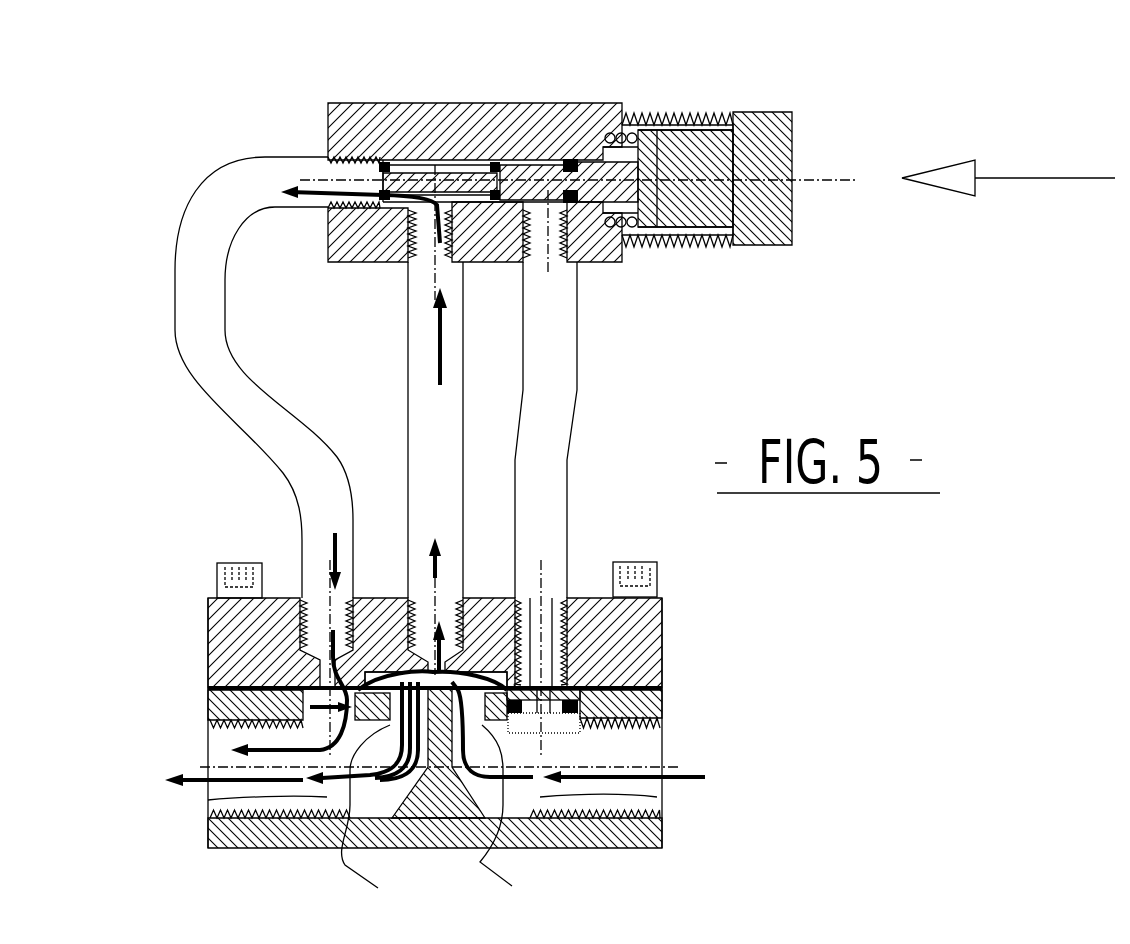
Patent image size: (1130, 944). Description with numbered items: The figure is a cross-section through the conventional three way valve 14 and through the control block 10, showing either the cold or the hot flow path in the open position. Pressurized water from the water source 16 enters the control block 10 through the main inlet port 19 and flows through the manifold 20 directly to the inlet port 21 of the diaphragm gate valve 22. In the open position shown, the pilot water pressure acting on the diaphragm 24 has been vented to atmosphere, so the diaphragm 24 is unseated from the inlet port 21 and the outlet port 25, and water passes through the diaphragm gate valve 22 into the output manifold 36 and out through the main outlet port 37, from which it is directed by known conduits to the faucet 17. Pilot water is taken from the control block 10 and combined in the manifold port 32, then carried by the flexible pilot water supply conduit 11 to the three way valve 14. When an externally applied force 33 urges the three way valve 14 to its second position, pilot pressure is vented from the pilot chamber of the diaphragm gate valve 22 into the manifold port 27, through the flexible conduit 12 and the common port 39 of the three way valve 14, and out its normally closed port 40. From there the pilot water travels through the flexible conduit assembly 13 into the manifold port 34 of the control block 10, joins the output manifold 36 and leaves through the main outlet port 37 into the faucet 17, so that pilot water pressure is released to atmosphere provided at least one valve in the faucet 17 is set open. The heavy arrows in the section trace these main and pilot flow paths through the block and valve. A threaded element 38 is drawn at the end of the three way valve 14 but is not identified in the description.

The control block 10 is at (208, 658).
The flexible pilot water supply conduit 11 is at (576, 375).
The flexible pilot water exhaust conduit 12 is at (407, 358).
The flexible pilot water exhaust conduit 13 is at (177, 330).
The three way valve 14 is at (465, 102).
The pressurized water source 16 is at (597, 738).
The faucet 17 is at (278, 742).
The main inlet port 19 is at (660, 728).
The manifold 20 is at (657, 797).
The inlet port 21 is at (466, 799).
The diaphragm gate valve 22 is at (480, 675).
The diaphragm 24 is at (663, 687).
The outlet port 25 is at (376, 817).
The manifold port 27 is at (408, 598).
The manifold port 32 is at (567, 597).
The externally applied force 33 is at (1005, 178).
The manifold port 34 is at (302, 598).
The output manifold 36 is at (208, 800).
The main outlet port 37 is at (208, 730).
The adjusting nut 38 is at (577, 262).
The common port 39 is at (408, 262).
The normally closed port 40 is at (328, 157).